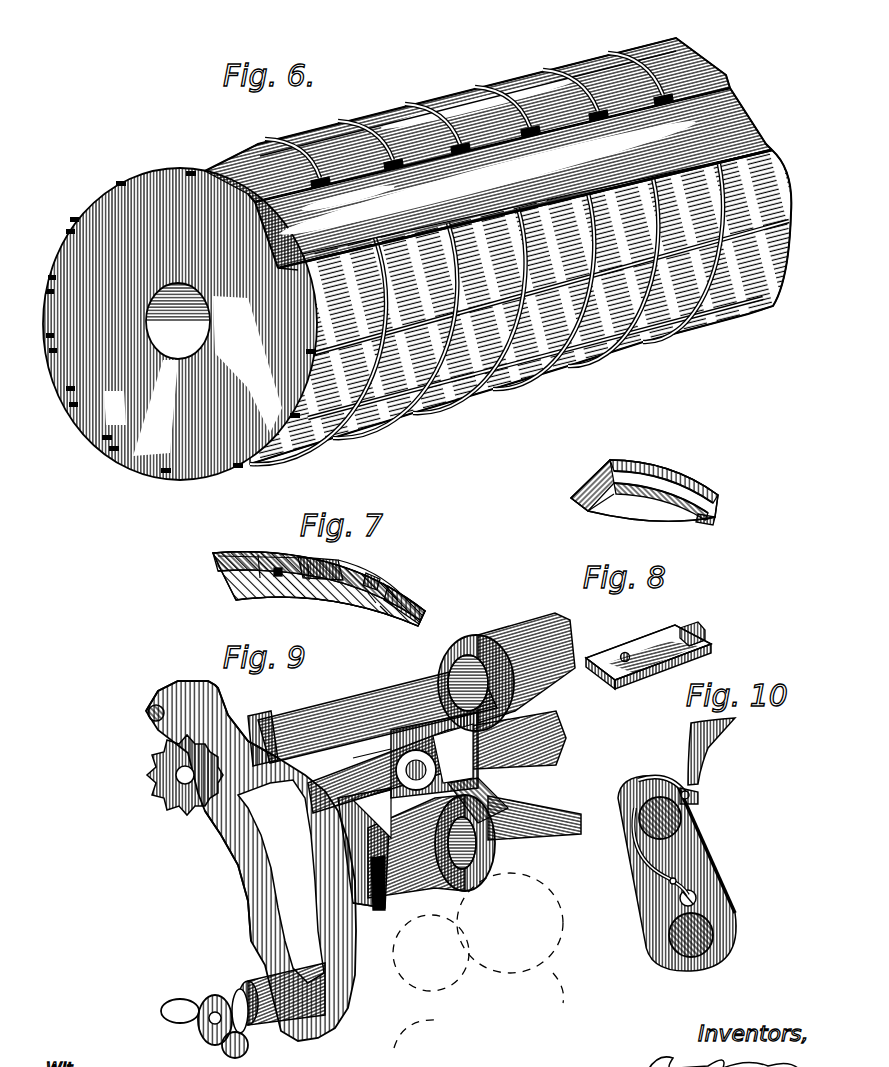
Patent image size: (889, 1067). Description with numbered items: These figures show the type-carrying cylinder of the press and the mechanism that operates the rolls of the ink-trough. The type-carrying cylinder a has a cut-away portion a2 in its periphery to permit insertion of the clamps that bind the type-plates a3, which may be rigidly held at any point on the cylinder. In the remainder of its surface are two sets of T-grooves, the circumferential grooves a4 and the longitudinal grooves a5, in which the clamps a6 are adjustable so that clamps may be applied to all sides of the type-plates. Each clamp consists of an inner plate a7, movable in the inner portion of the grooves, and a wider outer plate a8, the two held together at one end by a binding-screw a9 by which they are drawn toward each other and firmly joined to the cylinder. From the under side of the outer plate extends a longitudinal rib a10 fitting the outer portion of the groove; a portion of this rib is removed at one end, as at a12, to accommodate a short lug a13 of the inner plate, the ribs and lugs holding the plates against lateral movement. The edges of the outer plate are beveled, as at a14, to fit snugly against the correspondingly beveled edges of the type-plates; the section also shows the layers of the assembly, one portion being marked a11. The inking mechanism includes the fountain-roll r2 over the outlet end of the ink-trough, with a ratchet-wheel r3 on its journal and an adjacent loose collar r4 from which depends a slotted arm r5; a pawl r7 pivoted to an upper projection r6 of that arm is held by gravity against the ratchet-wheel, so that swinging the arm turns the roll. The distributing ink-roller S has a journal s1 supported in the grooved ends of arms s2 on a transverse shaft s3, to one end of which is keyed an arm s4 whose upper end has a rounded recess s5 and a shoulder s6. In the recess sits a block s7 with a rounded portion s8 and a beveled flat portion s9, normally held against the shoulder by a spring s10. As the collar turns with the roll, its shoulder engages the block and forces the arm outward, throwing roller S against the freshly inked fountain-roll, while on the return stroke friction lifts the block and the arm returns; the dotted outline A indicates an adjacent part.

In FIG. 6, the type-carrying cylinder a is at (94, 190).
In FIG. 7, the type-carrying cylinder a is at (392, 608).
In FIG. 6, the cut-away portion a2 is at (272, 256).
In FIG. 7, the type-plates a3 is at (243, 538).
In FIG. 7, the circumferential T-grooves a4 is at (391, 590).
In FIG. 6, the longitudinal T-grooves a5 is at (121, 176).
In FIG. 7, the longitudinal T-grooves a5 is at (265, 545).
In FIG. 7, the clamps a6 is at (367, 577).
In FIG. 8, the clamps a6 is at (680, 520).
In FIG. 8, the inner plate a7 is at (630, 628).
In FIG. 7, the outer plate a8 is at (331, 560).
In FIG. 8, the outer plate a8 is at (640, 466).
In FIG. 7, the binding-screw a9 is at (320, 552).
In FIG. 7, the longitudinal rib a10 is at (300, 570).
In FIG. 8, the longitudinal rib a10 is at (597, 503).
In FIG. 7, the intermediate layer a11 is at (367, 594).
In FIG. 7, the removed portion of rib a12 is at (378, 580).
In FIG. 8, the removed portion of rib a12 is at (658, 563).
In FIG. 7, the short lug a13 is at (377, 604).
In FIG. 8, the short lug a13 is at (688, 623).
In FIG. 7, the beveled edges a14 is at (273, 568).
In FIG. 8, the beveled edges a14 is at (587, 471).
In FIG. 9, the fountain-roll r2 is at (495, 626).
In FIG. 9, the ratchet-wheel r3 is at (170, 792).
In FIG. 9, the loose collar r4 is at (242, 722).
In FIG. 9, the slotted arm r5 is at (243, 830).
In FIG. 9, the upper projection r6 is at (230, 699).
In FIG. 9, the pawl r7 is at (188, 684).
In FIG. 9, the distributing ink-roller S is at (390, 725).
In FIG. 10, the distributing ink-roller S is at (687, 743).
In FIG. 9, the journal s1 is at (445, 767).
In FIG. 9, the arms s2 is at (512, 790).
In FIG. 9, the transverse shaft s3 is at (395, 893).
In FIG. 10, the transverse shaft s3 is at (704, 922).
In FIG. 9, the arm s4 is at (366, 876).
In FIG. 10, the arm s4 is at (707, 853).
In FIG. 10, the rounded recess s5 is at (674, 815).
In FIG. 10, the shoulder s6 is at (692, 792).
In FIG. 9, the block s7 is at (337, 755).
In FIG. 10, the block s7 is at (673, 783).
In FIG. 10, the rounded portion s8 is at (632, 847).
In FIG. 9, the flat portion s9 is at (364, 849).
In FIG. 10, the flat portion s9 is at (637, 797).
In FIG. 10, the spring s10 is at (658, 867).
In FIG. 9, the dotted outline of adjacent part A is at (362, 967).